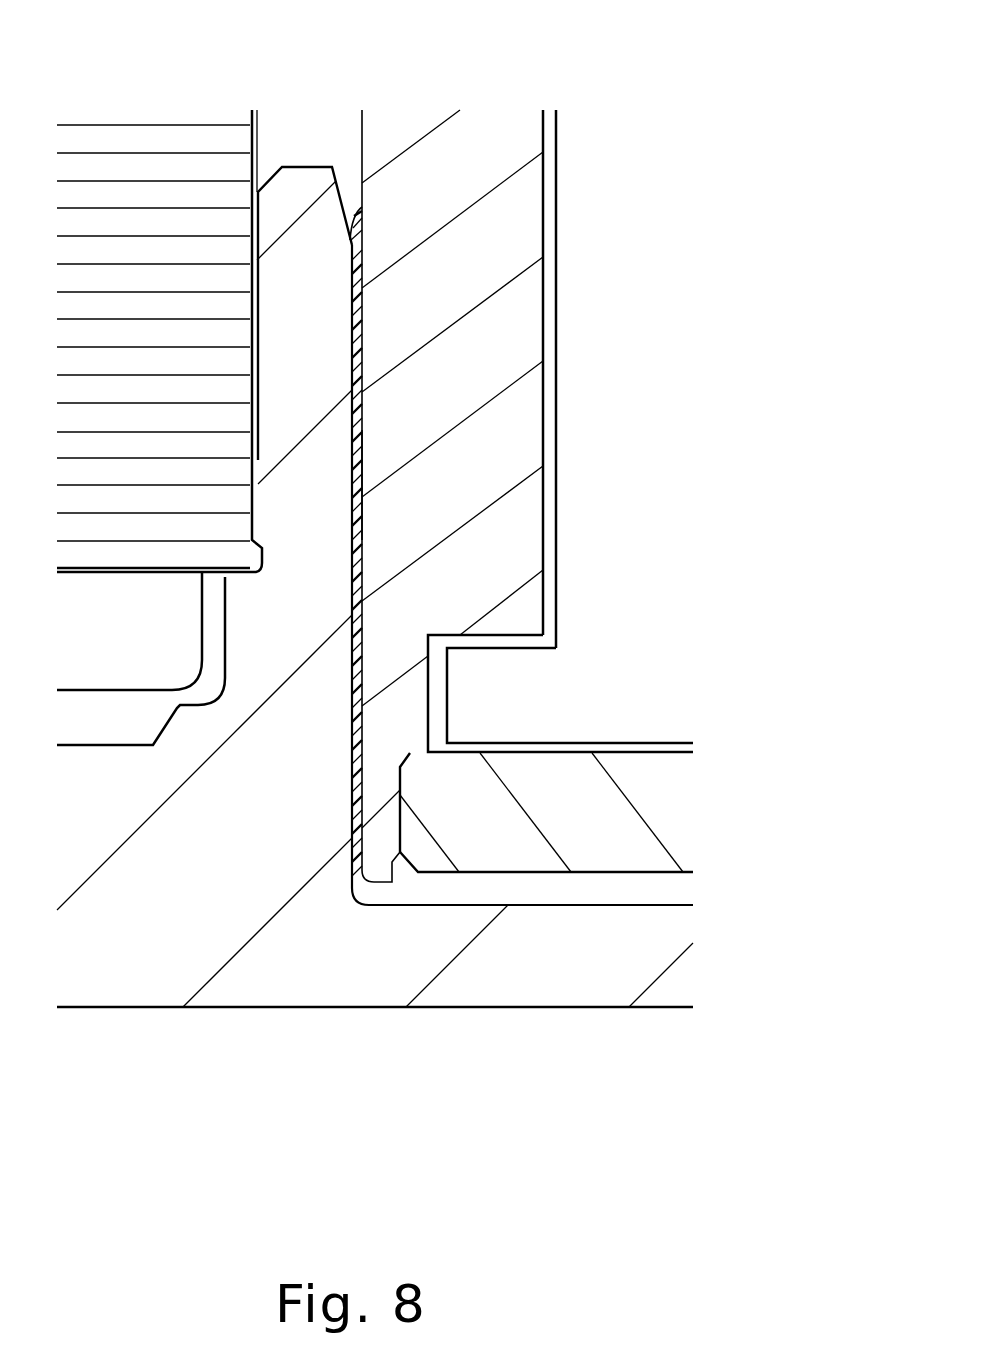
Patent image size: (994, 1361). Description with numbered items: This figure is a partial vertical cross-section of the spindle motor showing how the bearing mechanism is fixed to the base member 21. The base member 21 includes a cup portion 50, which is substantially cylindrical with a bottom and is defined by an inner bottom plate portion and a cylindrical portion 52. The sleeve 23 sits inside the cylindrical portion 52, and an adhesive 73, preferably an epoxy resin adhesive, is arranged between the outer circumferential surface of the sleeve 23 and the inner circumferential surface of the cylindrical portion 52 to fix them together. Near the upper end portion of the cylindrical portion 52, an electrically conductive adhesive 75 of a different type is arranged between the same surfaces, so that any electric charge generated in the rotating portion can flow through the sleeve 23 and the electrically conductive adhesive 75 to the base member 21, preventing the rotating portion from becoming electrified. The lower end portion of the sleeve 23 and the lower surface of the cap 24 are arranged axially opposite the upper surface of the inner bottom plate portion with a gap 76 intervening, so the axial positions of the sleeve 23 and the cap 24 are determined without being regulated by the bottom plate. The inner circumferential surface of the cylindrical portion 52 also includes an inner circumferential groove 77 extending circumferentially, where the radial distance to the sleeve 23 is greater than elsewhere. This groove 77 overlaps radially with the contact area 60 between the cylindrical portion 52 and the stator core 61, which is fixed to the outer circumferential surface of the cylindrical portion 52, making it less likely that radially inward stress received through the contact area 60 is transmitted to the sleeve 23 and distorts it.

The base member 21 is at (146, 1021).
The sleeve 23 is at (468, 261).
The cap 24 is at (605, 810).
The cup portion 50 is at (233, 1128).
The cylindrical portion 52 is at (303, 380).
The contact area 60 is at (247, 507).
The stator core 61 is at (165, 222).
The adhesive 73 is at (352, 300).
The electrically conductive adhesive 75 is at (362, 218).
The gap 76 is at (578, 884).
The inner circumferential groove 77 is at (353, 483).